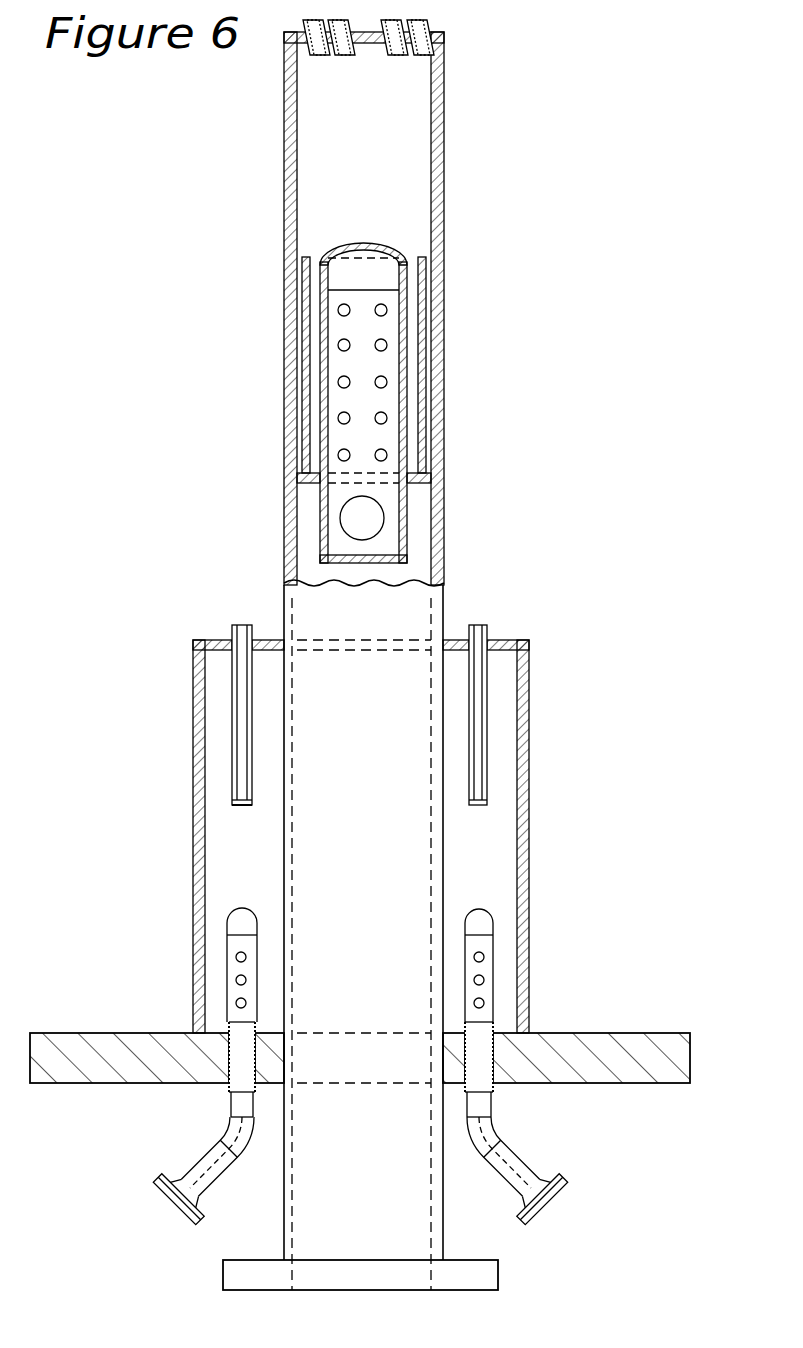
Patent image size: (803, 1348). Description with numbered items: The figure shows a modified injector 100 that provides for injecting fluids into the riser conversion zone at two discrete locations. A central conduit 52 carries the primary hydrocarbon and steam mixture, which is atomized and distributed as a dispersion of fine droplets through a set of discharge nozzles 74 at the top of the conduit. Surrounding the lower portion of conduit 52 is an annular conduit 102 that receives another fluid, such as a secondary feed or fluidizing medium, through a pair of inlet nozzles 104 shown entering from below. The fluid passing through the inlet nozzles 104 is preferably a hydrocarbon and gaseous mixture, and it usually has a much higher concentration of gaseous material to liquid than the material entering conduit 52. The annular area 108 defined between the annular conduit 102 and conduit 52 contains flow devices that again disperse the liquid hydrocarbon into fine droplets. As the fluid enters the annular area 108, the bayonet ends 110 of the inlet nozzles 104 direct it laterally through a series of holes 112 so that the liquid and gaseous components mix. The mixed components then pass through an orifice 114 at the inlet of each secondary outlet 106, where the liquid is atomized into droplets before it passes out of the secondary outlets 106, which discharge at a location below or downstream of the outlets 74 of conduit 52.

The conduit 52 is at (285, 250).
The discharge nozzles 74 is at (408, 57).
The modified injector 100 is at (450, 361).
The annular conduit 102 is at (529, 793).
The inlet nozzles 104 is at (196, 1165).
The secondary outlets 106 is at (243, 623).
The annular area 108 is at (492, 860).
The bayonet ends 110 is at (227, 945).
The holes 112 is at (236, 1003).
The orifice 114 is at (243, 807).